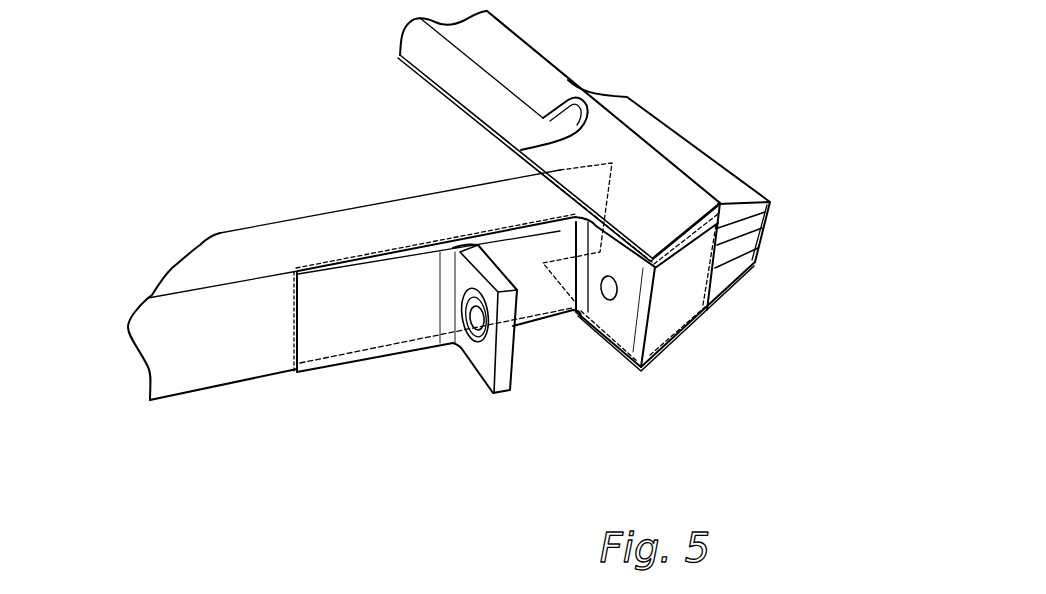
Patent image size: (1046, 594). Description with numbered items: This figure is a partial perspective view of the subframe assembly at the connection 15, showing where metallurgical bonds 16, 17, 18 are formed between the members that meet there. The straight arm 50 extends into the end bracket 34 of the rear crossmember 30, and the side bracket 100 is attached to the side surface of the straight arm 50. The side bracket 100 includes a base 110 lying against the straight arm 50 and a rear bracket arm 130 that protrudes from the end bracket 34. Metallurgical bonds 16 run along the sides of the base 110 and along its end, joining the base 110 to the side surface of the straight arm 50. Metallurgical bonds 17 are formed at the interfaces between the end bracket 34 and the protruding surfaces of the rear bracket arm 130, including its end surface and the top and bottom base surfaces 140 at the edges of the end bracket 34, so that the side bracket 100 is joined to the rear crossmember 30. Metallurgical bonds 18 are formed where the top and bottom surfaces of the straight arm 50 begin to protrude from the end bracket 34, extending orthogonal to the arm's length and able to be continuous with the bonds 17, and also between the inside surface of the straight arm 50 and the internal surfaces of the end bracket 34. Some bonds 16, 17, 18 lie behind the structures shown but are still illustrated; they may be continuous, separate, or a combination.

The connection 15 is at (415, 116).
The metallurgical bonds 16 is at (355, 258).
The metallurgical bonds 17 is at (620, 233).
The metallurgical bonds 18 is at (570, 258).
The rear crossmember 30 is at (450, 72).
The end bracket 34 is at (672, 203).
The straight arm 50 is at (252, 255).
The side bracket 100 is at (515, 416).
The base 110 is at (373, 320).
The rear bracket arm 130 is at (682, 318).
The top and bottom base surfaces 140 is at (700, 232).